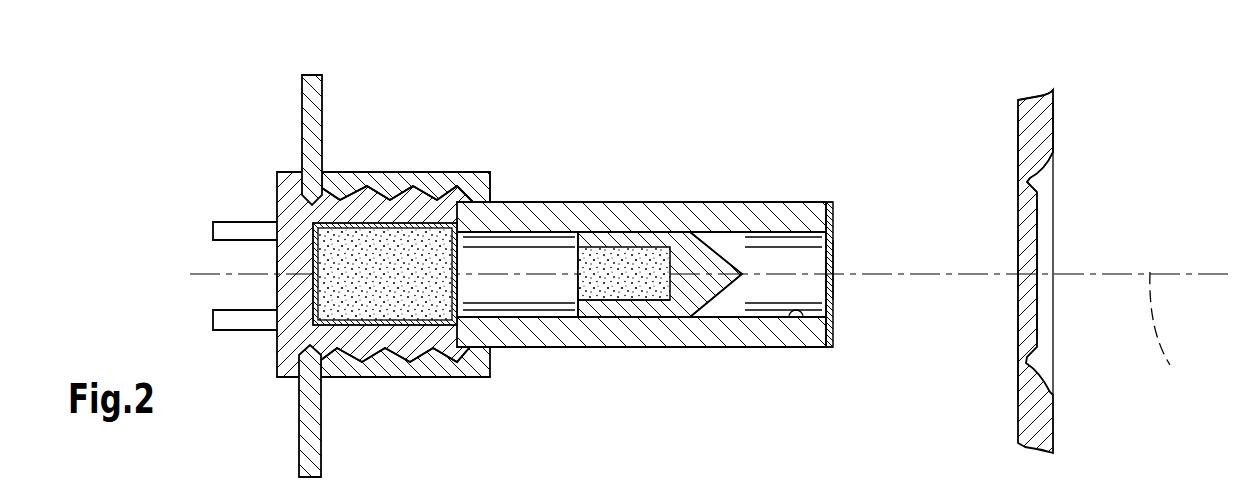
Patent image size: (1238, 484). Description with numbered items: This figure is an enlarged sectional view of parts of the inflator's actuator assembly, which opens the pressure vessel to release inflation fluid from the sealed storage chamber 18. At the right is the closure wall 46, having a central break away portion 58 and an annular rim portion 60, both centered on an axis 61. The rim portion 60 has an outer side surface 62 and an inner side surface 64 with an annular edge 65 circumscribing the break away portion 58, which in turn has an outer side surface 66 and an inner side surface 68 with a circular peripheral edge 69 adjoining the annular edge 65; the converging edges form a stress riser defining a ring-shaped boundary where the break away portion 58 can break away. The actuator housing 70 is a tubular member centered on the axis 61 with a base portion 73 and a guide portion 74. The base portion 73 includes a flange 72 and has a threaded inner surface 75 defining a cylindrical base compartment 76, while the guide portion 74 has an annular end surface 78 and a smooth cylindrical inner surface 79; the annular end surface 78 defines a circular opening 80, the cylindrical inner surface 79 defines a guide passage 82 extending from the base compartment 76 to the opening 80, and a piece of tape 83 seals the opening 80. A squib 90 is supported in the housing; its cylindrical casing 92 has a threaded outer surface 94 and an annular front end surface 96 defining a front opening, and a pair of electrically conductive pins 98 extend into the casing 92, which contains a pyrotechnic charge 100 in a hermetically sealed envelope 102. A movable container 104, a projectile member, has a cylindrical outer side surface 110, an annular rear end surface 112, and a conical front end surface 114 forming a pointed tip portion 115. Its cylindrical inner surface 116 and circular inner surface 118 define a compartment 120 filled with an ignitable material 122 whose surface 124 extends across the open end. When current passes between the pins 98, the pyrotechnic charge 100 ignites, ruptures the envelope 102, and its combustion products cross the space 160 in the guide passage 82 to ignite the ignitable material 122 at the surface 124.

The storage chamber 18 is at (1148, 211).
The closure wall 46 is at (1054, 91).
The break away portion 58 is at (1031, 312).
The rim portion 60 is at (1036, 122).
The axis 61 is at (1173, 331).
The outer side surface 62 is at (1018, 157).
The inner side surface 64 is at (1053, 142).
The annular edge 65 is at (1041, 164).
The outer side surface 66 is at (1018, 257).
The inner side surface 68 is at (1040, 242).
The circular peripheral edge 69 is at (1031, 184).
The actuator housing 70 is at (398, 164).
The flange 72 is at (313, 100).
The base portion 73 is at (468, 200).
The guide portion 74 is at (663, 213).
The threaded inner surface 75 is at (414, 203).
The base compartment 76 is at (335, 208).
The annular end surface 78 is at (829, 203).
The cylindrical inner surface 79 is at (797, 316).
The opening 80 is at (837, 262).
The guide passage 82 is at (835, 257).
The tape 83 is at (834, 333).
The squib 90 is at (275, 294).
The casing 92 is at (298, 336).
The threaded outer surface 94 is at (360, 192).
The front end surface 96 is at (462, 213).
The pins 98 is at (253, 232).
The pyrotechnic charge 100 is at (394, 290).
The envelope 102 is at (425, 327).
The movable container 104 is at (714, 319).
The cylindrical outer side surface 110 is at (611, 319).
The annular rear end surface 112 is at (571, 232).
The conical front end surface 114 is at (716, 247).
The pointed tip portion 115 is at (744, 276).
The cylindrical inner surface 116 is at (638, 256).
The circular inner surface 118 is at (647, 303).
The compartment 120 is at (575, 258).
The ignitable material 122 is at (575, 283).
The surface 124 is at (577, 291).
The space 160 is at (514, 231).